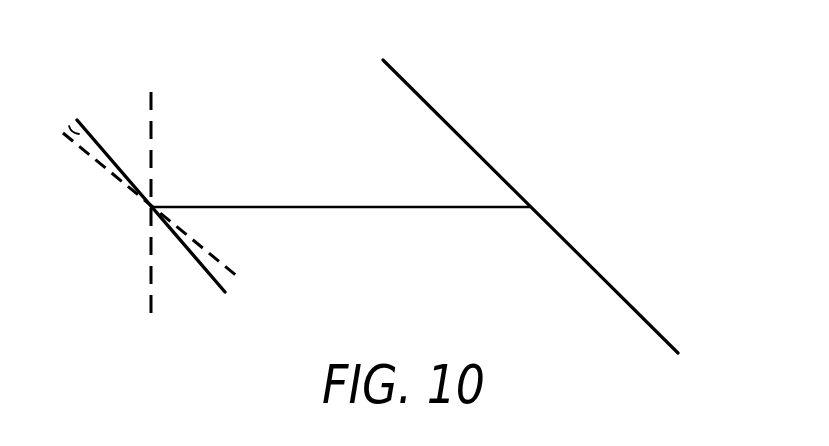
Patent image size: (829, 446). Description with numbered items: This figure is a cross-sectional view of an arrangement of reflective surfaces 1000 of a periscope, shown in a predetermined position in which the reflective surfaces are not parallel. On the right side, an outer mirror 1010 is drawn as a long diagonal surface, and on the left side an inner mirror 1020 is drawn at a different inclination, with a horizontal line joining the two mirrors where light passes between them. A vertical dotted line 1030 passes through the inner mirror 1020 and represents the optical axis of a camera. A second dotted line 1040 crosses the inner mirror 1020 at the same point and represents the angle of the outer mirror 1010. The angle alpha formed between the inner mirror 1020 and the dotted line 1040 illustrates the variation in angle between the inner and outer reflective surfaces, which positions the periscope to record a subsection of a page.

The arrangement of reflective surfaces 1000 is at (523, 65).
The outer mirror 1010 is at (476, 150).
The inner mirror 1020 is at (107, 150).
The dotted line 1030 is at (154, 98).
The dotted line 1040 is at (105, 167).